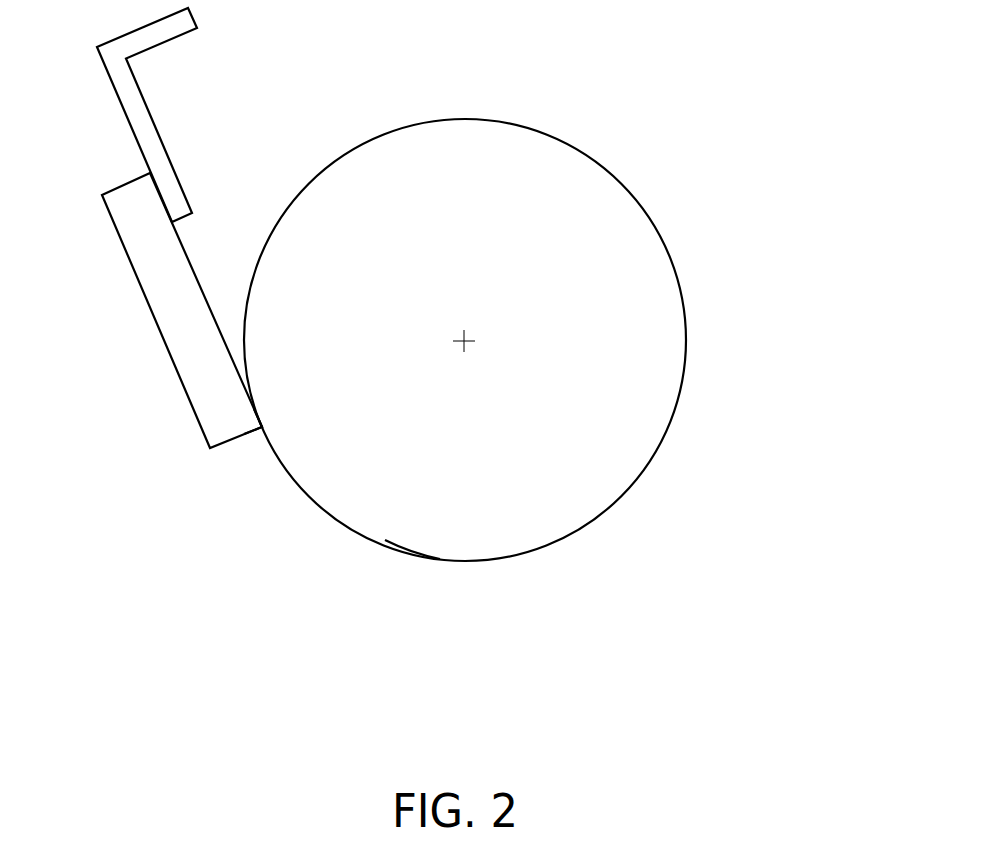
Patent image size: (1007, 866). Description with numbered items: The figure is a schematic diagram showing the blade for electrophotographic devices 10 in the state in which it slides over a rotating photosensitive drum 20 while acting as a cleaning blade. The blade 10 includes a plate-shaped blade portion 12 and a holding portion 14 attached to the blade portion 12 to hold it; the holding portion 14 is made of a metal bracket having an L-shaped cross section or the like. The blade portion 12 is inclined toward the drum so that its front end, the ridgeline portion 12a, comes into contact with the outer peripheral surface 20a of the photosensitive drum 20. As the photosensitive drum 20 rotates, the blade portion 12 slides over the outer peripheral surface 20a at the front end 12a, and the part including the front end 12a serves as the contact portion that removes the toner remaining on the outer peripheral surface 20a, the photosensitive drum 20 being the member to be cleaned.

The blade for electrophotographic devices 10 is at (140, 307).
The blade portion 12 is at (187, 402).
The front end (ridgeline portion) 12a is at (263, 428).
The holding portion 14 is at (143, 155).
The photosensitive drum 20 is at (623, 495).
The outer peripheral surface 20a is at (410, 560).